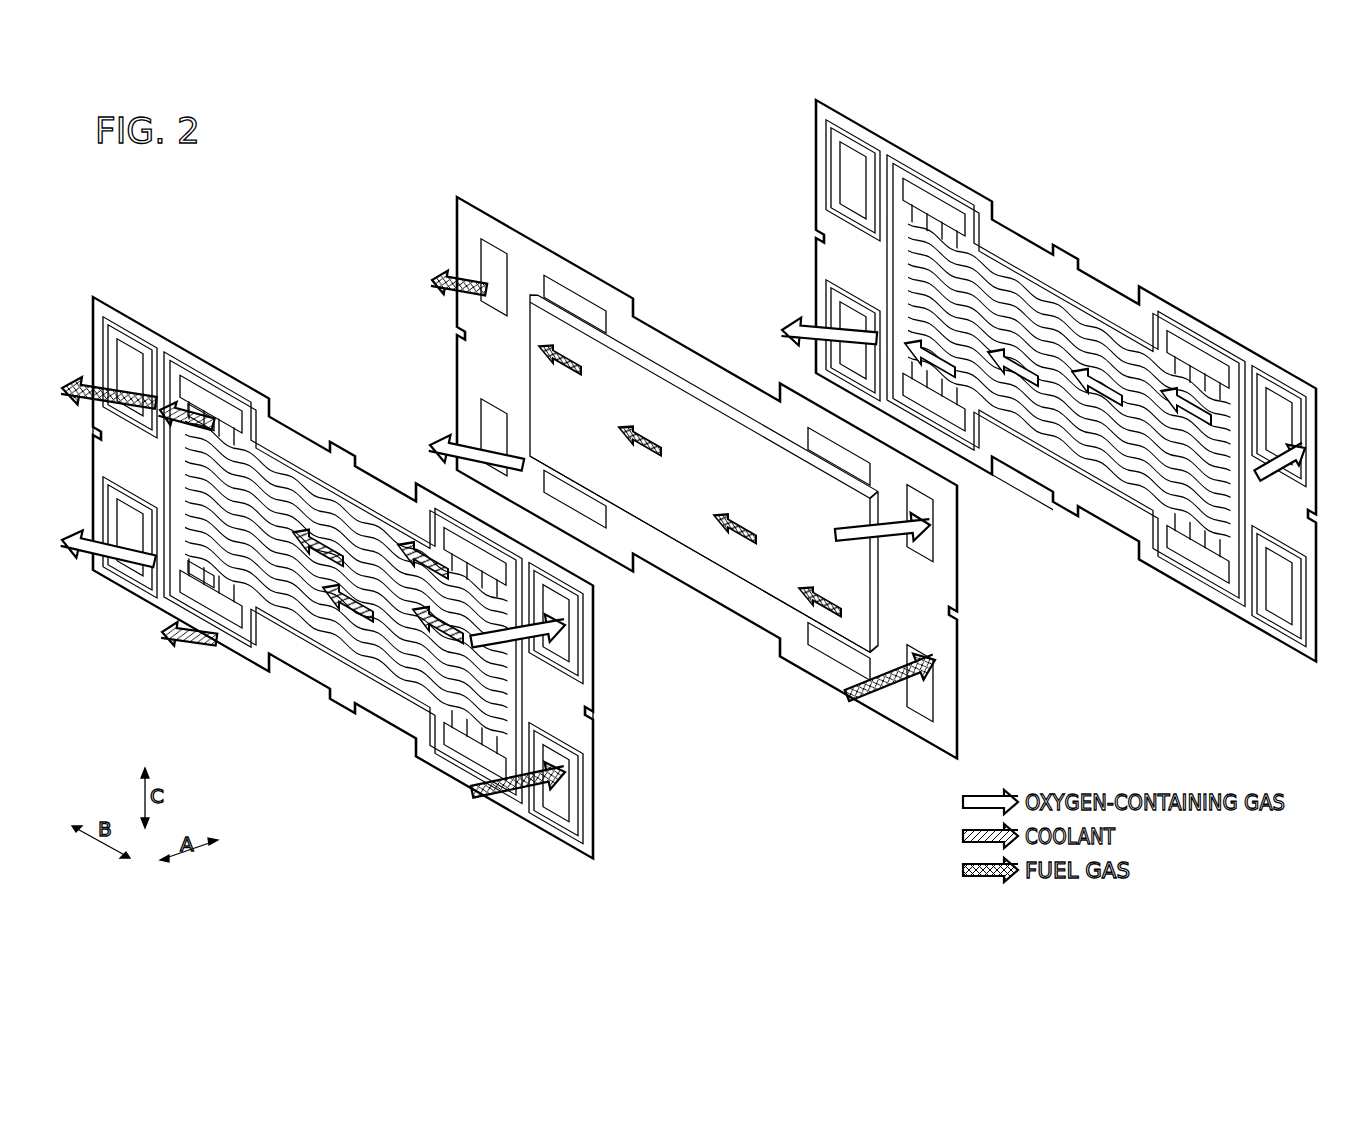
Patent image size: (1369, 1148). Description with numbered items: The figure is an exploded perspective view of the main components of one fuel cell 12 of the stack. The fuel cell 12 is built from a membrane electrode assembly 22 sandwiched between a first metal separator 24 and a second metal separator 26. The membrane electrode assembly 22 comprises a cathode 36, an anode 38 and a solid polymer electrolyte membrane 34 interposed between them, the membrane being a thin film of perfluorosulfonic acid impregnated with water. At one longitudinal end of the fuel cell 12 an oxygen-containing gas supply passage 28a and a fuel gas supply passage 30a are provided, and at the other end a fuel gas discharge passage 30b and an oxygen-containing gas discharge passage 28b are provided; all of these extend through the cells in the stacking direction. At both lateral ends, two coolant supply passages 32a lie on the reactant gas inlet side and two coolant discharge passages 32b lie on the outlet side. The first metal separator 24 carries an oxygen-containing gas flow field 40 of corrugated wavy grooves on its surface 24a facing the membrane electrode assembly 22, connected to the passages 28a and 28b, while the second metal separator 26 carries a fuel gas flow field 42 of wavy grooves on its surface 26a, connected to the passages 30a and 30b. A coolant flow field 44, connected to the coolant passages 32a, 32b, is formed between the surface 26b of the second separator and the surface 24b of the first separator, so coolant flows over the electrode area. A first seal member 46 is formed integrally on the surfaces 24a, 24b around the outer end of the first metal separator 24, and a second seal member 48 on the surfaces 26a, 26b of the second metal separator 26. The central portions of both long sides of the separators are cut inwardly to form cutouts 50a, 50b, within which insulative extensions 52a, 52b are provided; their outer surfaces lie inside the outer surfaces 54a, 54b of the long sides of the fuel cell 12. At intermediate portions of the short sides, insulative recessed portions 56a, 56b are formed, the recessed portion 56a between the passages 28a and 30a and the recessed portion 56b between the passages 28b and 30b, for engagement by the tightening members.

The fuel cell 12 is at (285, 208).
The membrane electrode assembly 22 is at (495, 197).
The first metal separator 24 is at (880, 128).
The surface of the first metal separator 24a is at (1112, 540).
The surface of the first metal separator 24b is at (1130, 555).
The second metal separator 26 is at (116, 298).
The surface of the second metal separator 26a is at (406, 740).
The surface of the second metal separator 26b is at (380, 706).
The oxygen-containing gas supply passage 28a is at (570, 645).
The oxygen-containing gas discharge passage 28b is at (129, 568).
The fuel gas supply passage 30a is at (580, 796).
The fuel gas discharge passage 30b is at (128, 352).
The coolant supply passage 32a is at (505, 555).
The coolant discharge passage 32b is at (236, 400).
The solid polymer electrolyte membrane 34 is at (920, 740).
The cathode 36 is at (675, 411).
The anode 38 is at (767, 564).
The oxygen-containing gas flow field 40 is at (1076, 345).
The fuel gas flow field 42 is at (274, 520).
The coolant flow field 44 is at (310, 670).
The first seal member 46 is at (1020, 262).
The second seal member 48 is at (174, 347).
The cutout 50a is at (393, 493).
The cutout 50b is at (278, 668).
The extension 52a is at (343, 442).
The extension 52b is at (343, 704).
The outer surface of the long side 54a is at (256, 398).
The outer surface of the long side 54b is at (123, 590).
The recessed portion 56a is at (591, 718).
The recessed portion 56b is at (92, 432).